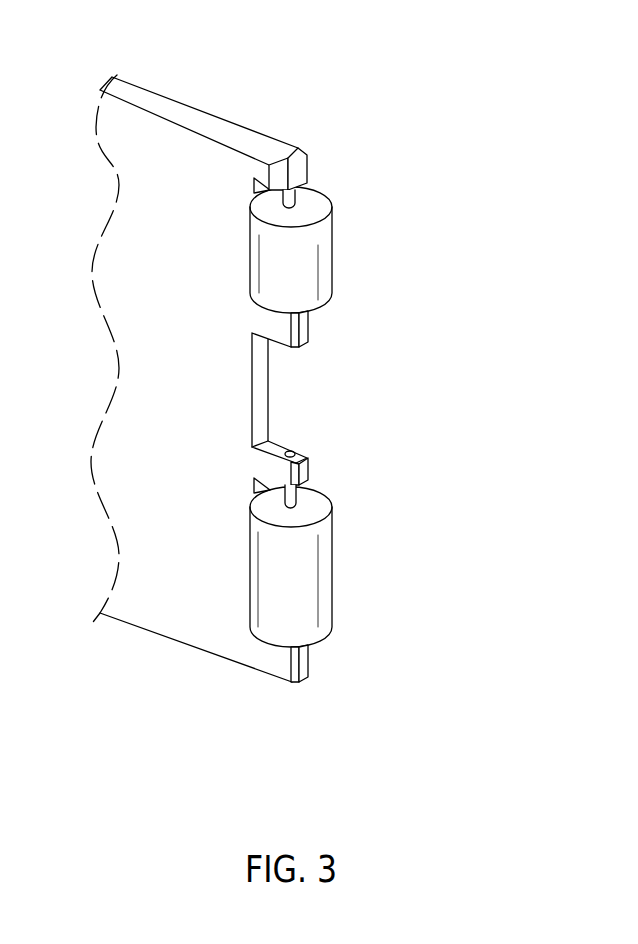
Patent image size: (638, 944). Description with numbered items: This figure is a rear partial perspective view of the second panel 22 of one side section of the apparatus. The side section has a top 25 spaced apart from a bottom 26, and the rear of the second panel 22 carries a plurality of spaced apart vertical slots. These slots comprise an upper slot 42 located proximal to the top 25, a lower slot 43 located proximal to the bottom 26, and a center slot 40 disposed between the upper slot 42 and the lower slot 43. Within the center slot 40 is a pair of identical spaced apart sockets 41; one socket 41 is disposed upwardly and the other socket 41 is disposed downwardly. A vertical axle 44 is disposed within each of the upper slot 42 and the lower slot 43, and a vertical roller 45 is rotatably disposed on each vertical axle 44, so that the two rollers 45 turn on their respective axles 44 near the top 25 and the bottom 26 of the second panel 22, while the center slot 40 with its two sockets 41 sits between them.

The second panel 22 is at (197, 626).
The top 25 is at (203, 95).
The bottom 26 is at (140, 638).
The center slot 40 is at (283, 383).
The socket 41 is at (293, 450).
The upper slot 42 is at (268, 197).
The lower slot 43 is at (260, 487).
The vertical axle 44 is at (286, 194).
The vertical roller 45 is at (323, 268).